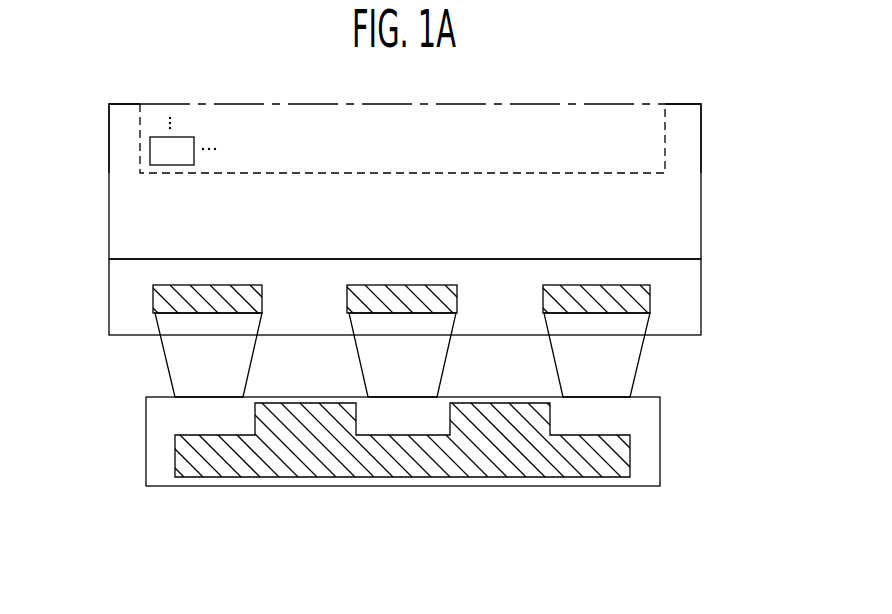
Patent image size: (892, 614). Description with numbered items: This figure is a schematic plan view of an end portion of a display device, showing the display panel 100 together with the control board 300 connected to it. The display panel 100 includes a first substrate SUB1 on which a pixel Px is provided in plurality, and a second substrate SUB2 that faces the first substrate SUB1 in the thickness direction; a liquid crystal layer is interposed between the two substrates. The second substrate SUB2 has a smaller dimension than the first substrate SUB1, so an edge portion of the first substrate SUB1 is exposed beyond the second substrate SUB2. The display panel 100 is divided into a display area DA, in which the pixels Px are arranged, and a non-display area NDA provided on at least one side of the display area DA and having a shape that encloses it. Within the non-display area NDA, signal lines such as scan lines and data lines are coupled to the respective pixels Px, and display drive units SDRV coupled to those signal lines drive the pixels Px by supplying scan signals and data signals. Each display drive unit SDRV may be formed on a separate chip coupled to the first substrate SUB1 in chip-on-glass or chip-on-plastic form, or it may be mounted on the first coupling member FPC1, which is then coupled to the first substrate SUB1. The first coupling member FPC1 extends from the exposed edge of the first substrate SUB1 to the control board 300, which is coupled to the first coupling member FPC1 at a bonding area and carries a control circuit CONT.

The display panel 100 is at (465, 219).
The first substrate SUB1 is at (444, 297).
The second substrate SUB2 is at (692, 213).
The display area DA is at (402, 108).
The non-display area NDA is at (692, 120).
The pixel Px is at (172, 151).
The display drive unit SDRV is at (162, 300).
The first coupling member FPC1 is at (175, 368).
The control board 300 is at (377, 480).
The control circuit CONT is at (250, 483).